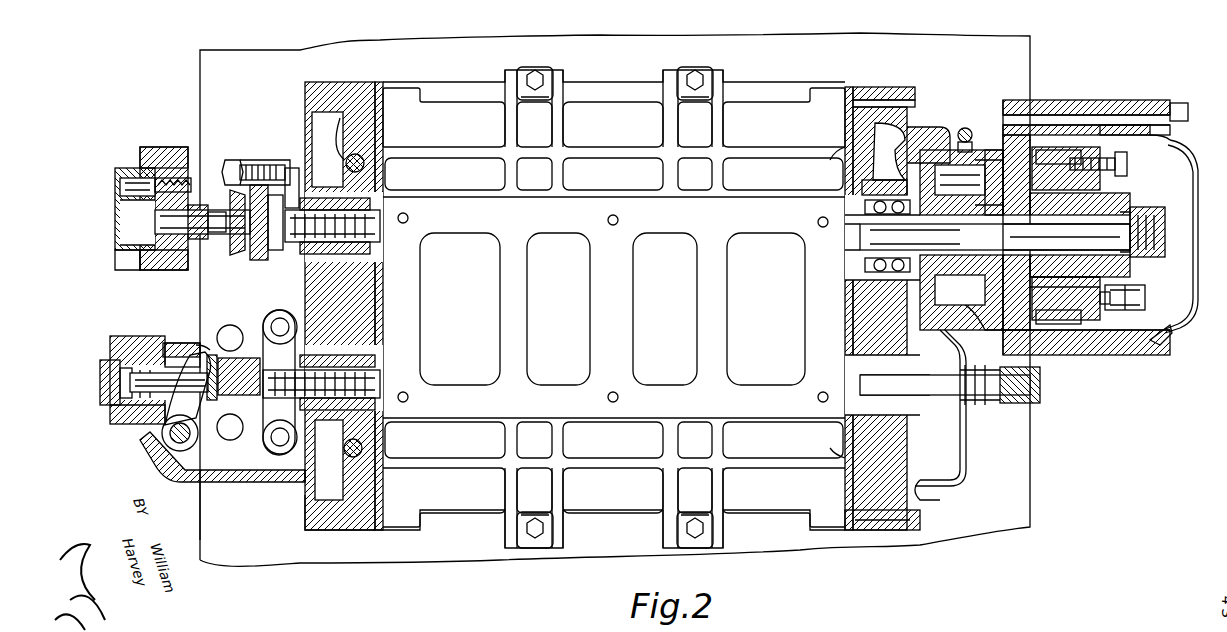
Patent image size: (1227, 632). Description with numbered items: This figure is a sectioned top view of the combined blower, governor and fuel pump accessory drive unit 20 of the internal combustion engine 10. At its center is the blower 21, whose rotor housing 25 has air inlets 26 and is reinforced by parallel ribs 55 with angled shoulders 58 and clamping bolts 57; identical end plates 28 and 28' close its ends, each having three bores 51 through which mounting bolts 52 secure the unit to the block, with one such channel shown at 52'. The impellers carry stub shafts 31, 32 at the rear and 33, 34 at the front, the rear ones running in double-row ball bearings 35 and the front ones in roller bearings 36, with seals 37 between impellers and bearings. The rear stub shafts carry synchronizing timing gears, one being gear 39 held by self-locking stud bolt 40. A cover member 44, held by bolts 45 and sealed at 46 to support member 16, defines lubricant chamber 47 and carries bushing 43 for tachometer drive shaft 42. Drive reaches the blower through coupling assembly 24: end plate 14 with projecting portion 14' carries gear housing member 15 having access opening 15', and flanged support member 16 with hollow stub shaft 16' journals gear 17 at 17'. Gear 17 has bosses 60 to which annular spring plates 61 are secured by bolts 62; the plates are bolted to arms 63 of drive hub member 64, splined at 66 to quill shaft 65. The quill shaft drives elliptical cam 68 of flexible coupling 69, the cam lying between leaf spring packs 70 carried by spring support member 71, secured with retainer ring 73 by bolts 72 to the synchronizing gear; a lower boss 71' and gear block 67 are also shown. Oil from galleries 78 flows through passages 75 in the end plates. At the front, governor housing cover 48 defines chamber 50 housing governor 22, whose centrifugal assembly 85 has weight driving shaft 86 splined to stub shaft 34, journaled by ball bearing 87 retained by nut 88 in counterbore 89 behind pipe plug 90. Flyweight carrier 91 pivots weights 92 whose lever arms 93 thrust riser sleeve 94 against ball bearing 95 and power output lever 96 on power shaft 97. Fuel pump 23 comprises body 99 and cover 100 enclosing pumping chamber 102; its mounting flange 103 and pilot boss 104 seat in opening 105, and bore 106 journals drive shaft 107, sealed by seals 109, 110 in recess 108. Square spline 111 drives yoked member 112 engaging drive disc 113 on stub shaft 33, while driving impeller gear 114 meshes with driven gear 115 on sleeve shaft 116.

The internal combustion engine 10 is at (192, 66).
The end plate 14 is at (1086, 96).
The projecting portion 14' is at (1086, 356).
The gear housing member 15 is at (1135, 101).
The accessory gear access opening 15' is at (1107, 342).
The flanged support member 16 is at (1076, 197).
The hollow stub shaft portion 16' is at (1153, 211).
The gear 17 is at (1066, 131).
The journal bearing 17' is at (1066, 237).
The accessory drive unit 20 is at (303, 527).
The blower 21 is at (629, 522).
The governor 22 is at (170, 442).
The fuel pump 23 is at (128, 276).
The drive coupling assembly 24 is at (942, 150).
The rotor housing 25 is at (768, 105).
The air inlets 26 is at (650, 245).
The end plate 28 is at (882, 289).
The end plate 28' is at (344, 273).
The stub shaft 31 is at (850, 250).
The stub shaft 32 is at (848, 362).
The stub shaft 33 is at (385, 210).
The stub shaft 34 is at (380, 362).
The double-row ball bearings 35 is at (850, 160).
The roller bearings 36 is at (312, 200).
The oil and compression seals 37 is at (383, 245).
The timing gear 39 is at (848, 228).
The self-locking stud bolt 40 is at (848, 385).
The tachometer drive shaft 42 is at (975, 397).
The bushing 43 is at (1025, 405).
The cover member 44 is at (965, 462).
The bolts 45 is at (925, 530).
The seal 46 is at (966, 128).
The lubricant receiving chamber 47 is at (935, 490).
The governor housing and end plate cover member 48 is at (282, 482).
The lubricant receiving chamber 50 is at (255, 482).
The bores 51 is at (352, 158).
The mounting bolts 52 is at (612, 333).
The channel 52' is at (783, 174).
The ribs 55 is at (512, 108).
The bolt 57 is at (530, 66).
The angled shoulders 58 is at (518, 84).
The boss 60 is at (1102, 150).
The annular spring plates 61 is at (1108, 310).
The bolts 62 is at (1168, 140).
The arms 63 is at (1172, 325).
The drive hub member 64 is at (1192, 175).
The quill shaft 65 is at (1138, 312).
The spline 66 is at (1165, 235).
The lower gear block 67 is at (1045, 280).
The elliptical cam member 68 is at (1040, 240).
The spring loaded flexible coupling 69 is at (920, 290).
The leaf spring packs 70 is at (990, 160).
The spring support member 71 is at (928, 135).
The lower boss 71' is at (1065, 292).
The bolts 72 is at (992, 150).
The retainer ring 73 is at (1050, 266).
The passages 75 is at (862, 275).
The oil distribution galleries 78 is at (925, 150).
The centrifugal assembly 85 is at (244, 436).
The weight driving shaft 86 is at (200, 373).
The ball bearing assembly 87 is at (150, 338).
The nut 88 is at (122, 398).
The counterbore 89 is at (120, 420).
The pipe plug closure 90 is at (100, 378).
The flyweight carrier 91 is at (270, 440).
The centrifugal weights 92 is at (275, 318).
The lever arm 93 is at (262, 368).
The riser sleeve 94 is at (232, 334).
The ball bearing 95 is at (195, 343).
The power output lever 96 is at (158, 415).
The power shaft 97 is at (178, 452).
The pump body member 99 is at (188, 175).
The cover member 100 is at (118, 183).
The pumping chamber 102 is at (128, 200).
The mounting flange 103 is at (285, 160).
The pilot boss 104 is at (245, 165).
The opening 105 is at (262, 262).
The bore 106 is at (160, 262).
The drive shaft 107 is at (128, 230).
The counterbored recess 108 is at (190, 260).
The seal 109 is at (215, 262).
The seal 110 is at (228, 160).
The square spline 111 is at (260, 165).
The yoked member 112 is at (240, 258).
The drive disc 113 is at (292, 168).
The driving impeller gear 114 is at (142, 258).
The driven impeller gear 115 is at (142, 165).
The stationary sleeve shaft 116 is at (180, 155).